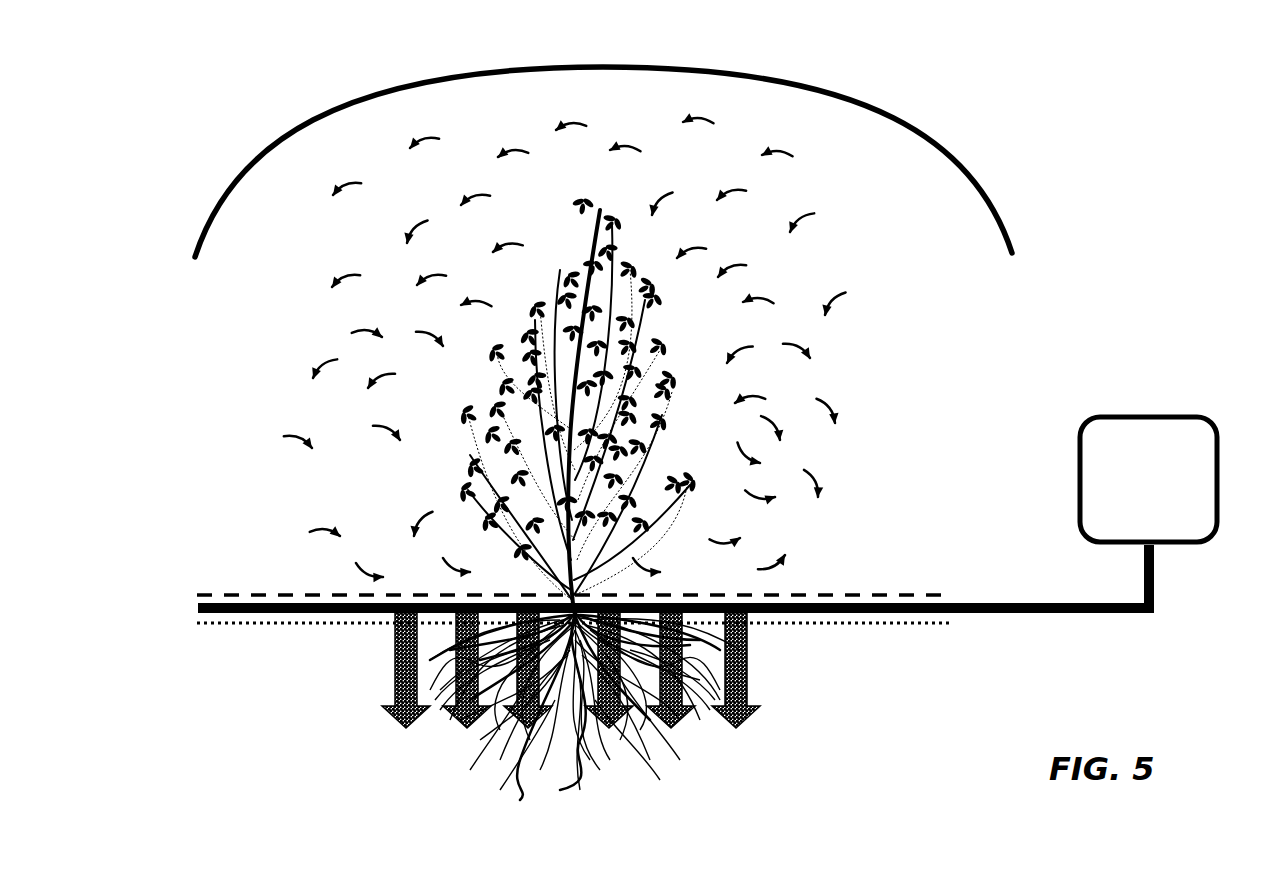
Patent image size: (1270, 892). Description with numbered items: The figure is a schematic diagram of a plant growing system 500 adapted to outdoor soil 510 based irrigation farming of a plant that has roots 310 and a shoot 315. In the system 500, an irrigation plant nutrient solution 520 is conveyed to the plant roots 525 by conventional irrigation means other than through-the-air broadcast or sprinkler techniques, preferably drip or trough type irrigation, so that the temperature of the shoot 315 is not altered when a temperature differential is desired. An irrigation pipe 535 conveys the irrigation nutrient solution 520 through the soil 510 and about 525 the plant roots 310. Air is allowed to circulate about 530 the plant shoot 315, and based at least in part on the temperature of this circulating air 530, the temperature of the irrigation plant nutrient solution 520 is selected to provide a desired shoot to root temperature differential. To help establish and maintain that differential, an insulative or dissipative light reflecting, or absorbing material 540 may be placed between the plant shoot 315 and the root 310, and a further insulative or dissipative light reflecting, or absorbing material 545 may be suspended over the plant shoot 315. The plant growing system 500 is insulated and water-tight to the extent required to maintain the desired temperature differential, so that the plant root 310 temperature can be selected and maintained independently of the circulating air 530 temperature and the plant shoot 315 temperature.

The plant growing system 500 is at (178, 135).
The insulative or dissipative light reflecting, or absorbing material 545 is at (1000, 193).
The circulating air 530 is at (795, 264).
The shoot 315 is at (458, 453).
The plant roots region 525 is at (575, 745).
The soil 510 is at (387, 633).
The irrigation pipe 535 is at (1053, 630).
The insulative or dissipative light reflecting, or absorbing material 540 is at (900, 583).
The roots 310 is at (417, 747).
The irrigation plant nutrient solution 520 is at (1148, 479).